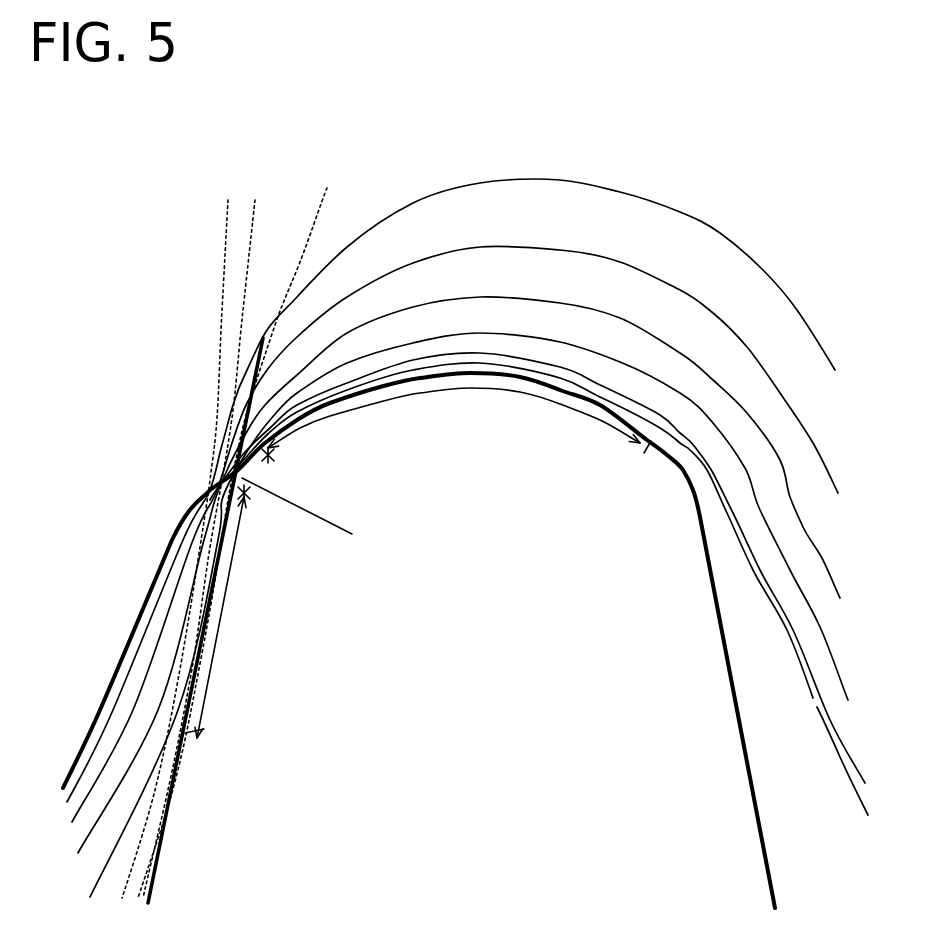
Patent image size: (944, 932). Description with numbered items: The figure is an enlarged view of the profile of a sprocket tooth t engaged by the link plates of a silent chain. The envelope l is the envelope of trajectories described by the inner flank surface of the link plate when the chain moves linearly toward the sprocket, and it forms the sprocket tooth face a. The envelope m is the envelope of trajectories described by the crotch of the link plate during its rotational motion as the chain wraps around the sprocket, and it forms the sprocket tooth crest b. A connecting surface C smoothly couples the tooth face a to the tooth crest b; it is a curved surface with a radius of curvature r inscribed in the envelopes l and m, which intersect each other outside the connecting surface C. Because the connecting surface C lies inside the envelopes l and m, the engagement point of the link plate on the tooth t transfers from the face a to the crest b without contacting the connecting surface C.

The envelope of trajectories described by the crotch m is at (600, 403).
The sprocket tooth crest b is at (459, 420).
The connecting surface C is at (250, 470).
The radius of curvature r is at (297, 516).
The sprocket tooth face a is at (219, 617).
The envelope of trajectories described by the inner flank surface l is at (215, 557).
The sprocket tooth t is at (455, 807).